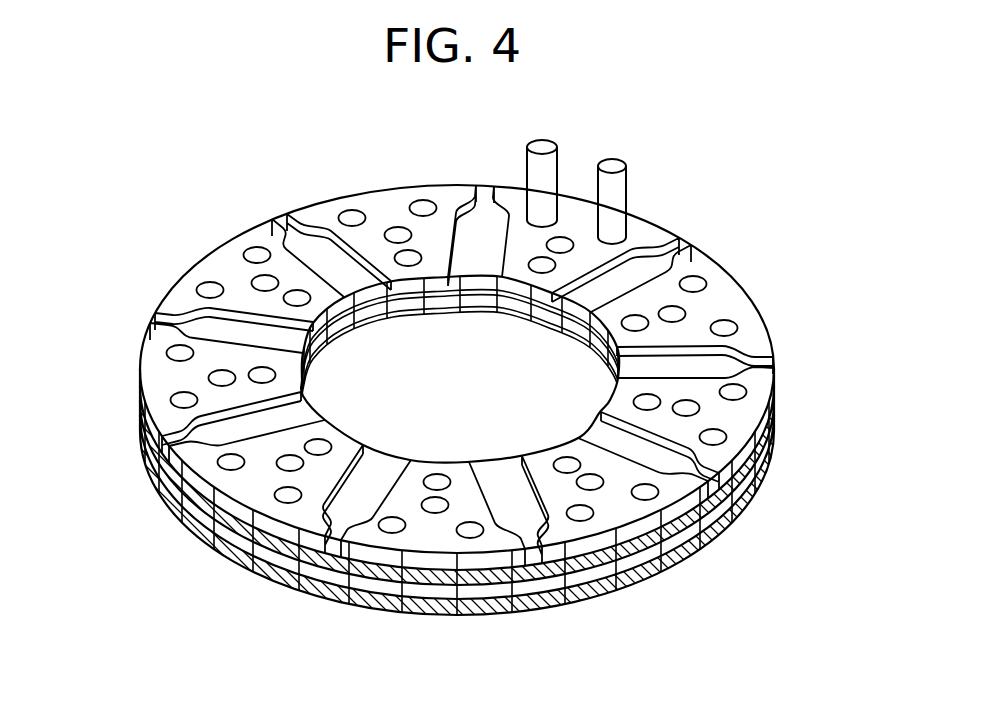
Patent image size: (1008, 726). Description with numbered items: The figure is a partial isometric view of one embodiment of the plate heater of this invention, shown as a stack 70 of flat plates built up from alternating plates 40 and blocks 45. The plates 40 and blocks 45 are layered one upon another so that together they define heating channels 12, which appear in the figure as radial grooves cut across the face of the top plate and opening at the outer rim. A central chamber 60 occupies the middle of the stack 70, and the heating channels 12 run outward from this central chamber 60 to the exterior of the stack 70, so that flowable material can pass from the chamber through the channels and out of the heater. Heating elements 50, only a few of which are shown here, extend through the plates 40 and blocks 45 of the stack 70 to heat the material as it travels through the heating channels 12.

The heating channel 12 is at (337, 270).
The plate 40 is at (727, 293).
The block 45 is at (656, 528).
The heating element 50 is at (598, 165).
The central chamber 60 is at (466, 394).
The stack 70 is at (140, 308).